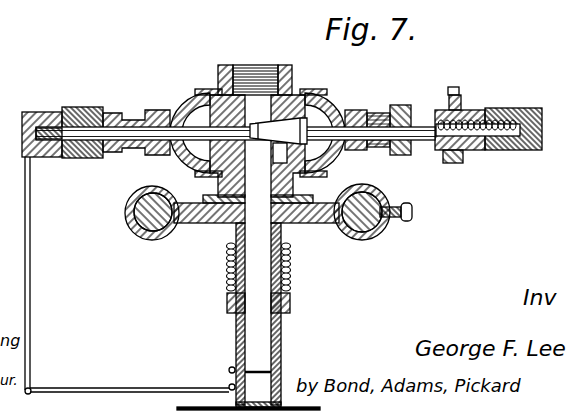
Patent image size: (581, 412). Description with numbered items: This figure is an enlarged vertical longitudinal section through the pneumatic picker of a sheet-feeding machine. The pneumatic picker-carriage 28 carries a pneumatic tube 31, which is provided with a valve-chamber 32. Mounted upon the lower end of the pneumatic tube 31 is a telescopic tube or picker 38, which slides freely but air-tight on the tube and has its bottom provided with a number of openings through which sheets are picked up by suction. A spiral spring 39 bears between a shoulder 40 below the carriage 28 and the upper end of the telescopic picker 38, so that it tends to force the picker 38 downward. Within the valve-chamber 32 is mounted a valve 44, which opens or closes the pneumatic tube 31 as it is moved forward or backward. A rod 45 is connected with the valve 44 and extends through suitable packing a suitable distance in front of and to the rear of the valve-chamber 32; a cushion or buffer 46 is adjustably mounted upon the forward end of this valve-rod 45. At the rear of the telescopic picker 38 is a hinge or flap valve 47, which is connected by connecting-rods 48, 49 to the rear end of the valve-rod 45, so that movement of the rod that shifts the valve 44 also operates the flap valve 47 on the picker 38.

The pneumatic picker-carriage 28 is at (204, 226).
The pneumatic tube 31 is at (291, 66).
The valve-chamber 32 is at (337, 103).
The telescopic tube or picker 38 is at (290, 304).
The spiral spring 39 is at (274, 267).
The shoulder 40 is at (288, 230).
The valve 44 is at (278, 131).
The rod 45 is at (137, 130).
The cushion or buffer 46 is at (523, 110).
The hinge or flap valve 47 is at (231, 378).
The connecting-rod 48 is at (116, 388).
The connecting-rod 49 is at (31, 243).